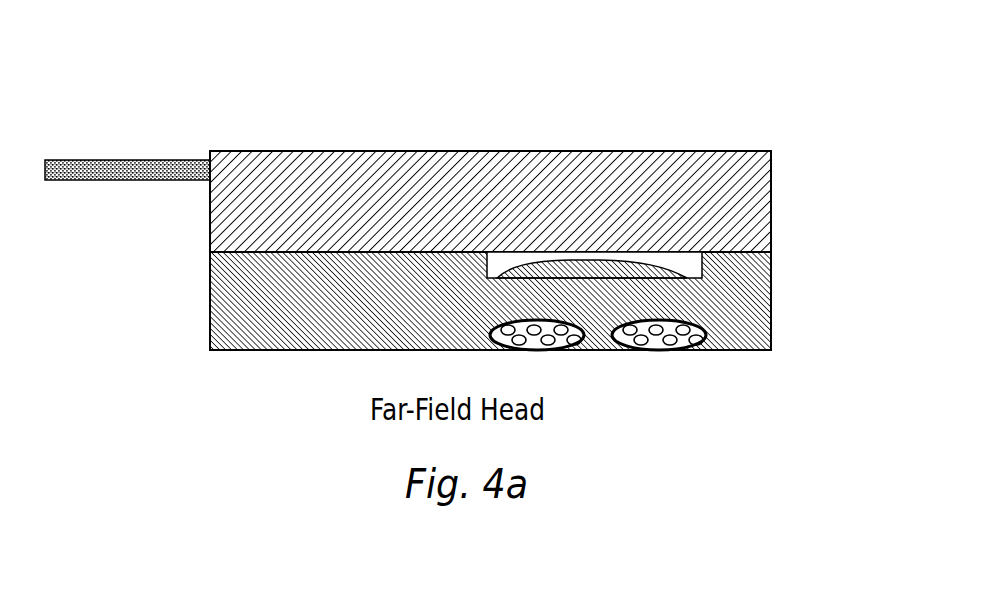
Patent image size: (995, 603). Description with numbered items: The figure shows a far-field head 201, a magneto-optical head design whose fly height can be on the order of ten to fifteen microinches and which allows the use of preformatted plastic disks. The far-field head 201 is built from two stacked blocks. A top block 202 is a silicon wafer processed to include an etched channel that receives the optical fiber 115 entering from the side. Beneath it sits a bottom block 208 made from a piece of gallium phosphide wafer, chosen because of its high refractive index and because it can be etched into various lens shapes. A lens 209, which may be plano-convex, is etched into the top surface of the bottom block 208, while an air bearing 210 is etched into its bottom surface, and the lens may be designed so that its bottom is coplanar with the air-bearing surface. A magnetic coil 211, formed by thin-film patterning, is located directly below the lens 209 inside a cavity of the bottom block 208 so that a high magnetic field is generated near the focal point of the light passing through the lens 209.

The far-field head 201 is at (717, 41).
The optical fiber 115 is at (151, 161).
The top block 202 is at (693, 174).
The bottom block 208 is at (771, 328).
The lens 209 is at (676, 272).
The air bearing 210 is at (296, 350).
The magnetic coil 211 is at (667, 342).